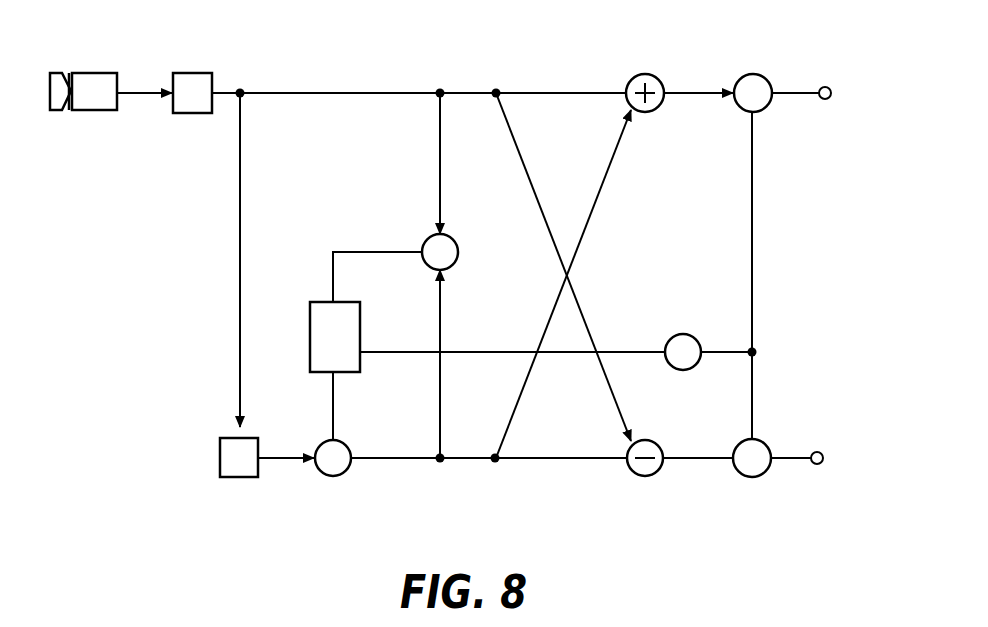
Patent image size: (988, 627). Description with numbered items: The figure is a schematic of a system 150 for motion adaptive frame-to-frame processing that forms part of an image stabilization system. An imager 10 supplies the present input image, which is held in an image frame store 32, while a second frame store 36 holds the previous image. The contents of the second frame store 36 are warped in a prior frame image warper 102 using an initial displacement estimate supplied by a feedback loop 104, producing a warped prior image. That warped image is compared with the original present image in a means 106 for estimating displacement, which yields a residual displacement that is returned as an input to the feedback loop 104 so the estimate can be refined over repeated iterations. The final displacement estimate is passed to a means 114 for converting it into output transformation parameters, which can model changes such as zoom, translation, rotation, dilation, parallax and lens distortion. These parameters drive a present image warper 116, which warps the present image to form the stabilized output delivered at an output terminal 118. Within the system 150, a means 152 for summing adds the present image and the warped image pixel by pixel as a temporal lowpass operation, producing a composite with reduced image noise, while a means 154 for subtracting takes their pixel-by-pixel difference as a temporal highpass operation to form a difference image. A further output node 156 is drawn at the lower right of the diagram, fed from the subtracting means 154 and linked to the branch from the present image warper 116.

The imager 10 is at (78, 73).
The image frame store 32 is at (194, 73).
The second frame store 36 is at (220, 467).
The prior frame image warper 102 is at (337, 477).
The feedback loop 104 is at (310, 325).
The means for estimating displacement 106 is at (428, 238).
The means for converting displacement to transformation parameters 114 is at (690, 334).
The present image warper 116 is at (757, 74).
The output terminal 118 is at (832, 93).
The system for motion adaptive frame-to-frame processing 150 is at (499, 70).
The means for summing 152 is at (660, 79).
The means for subtracting 154 is at (648, 477).
The output node 156 is at (754, 477).